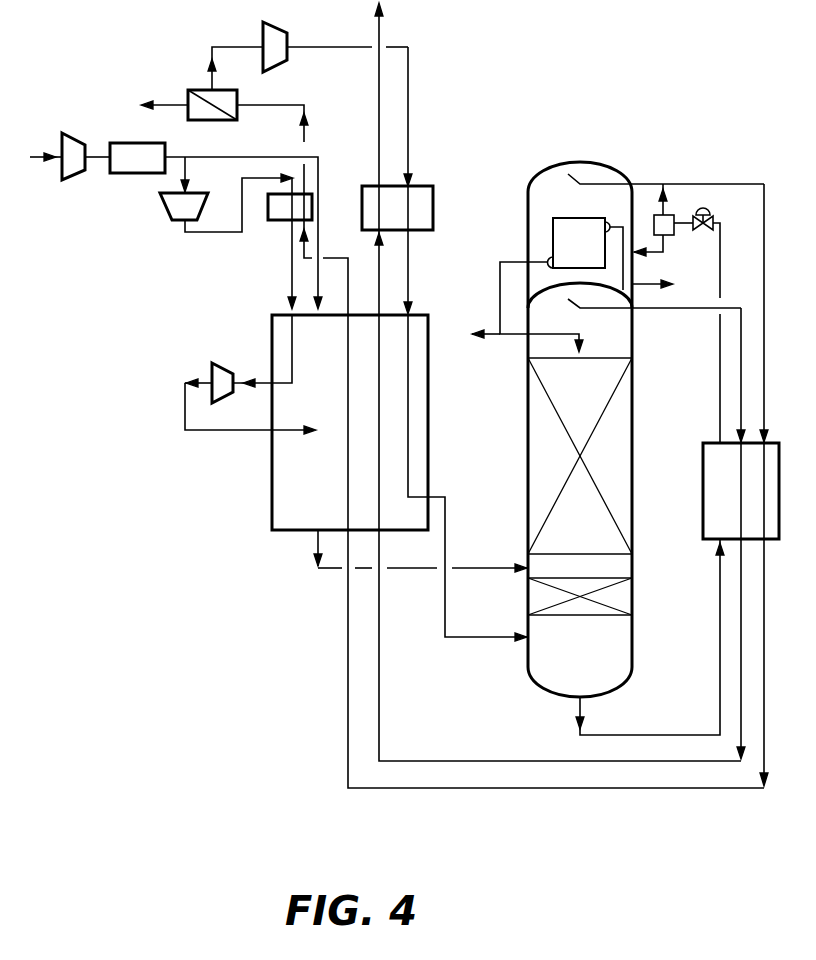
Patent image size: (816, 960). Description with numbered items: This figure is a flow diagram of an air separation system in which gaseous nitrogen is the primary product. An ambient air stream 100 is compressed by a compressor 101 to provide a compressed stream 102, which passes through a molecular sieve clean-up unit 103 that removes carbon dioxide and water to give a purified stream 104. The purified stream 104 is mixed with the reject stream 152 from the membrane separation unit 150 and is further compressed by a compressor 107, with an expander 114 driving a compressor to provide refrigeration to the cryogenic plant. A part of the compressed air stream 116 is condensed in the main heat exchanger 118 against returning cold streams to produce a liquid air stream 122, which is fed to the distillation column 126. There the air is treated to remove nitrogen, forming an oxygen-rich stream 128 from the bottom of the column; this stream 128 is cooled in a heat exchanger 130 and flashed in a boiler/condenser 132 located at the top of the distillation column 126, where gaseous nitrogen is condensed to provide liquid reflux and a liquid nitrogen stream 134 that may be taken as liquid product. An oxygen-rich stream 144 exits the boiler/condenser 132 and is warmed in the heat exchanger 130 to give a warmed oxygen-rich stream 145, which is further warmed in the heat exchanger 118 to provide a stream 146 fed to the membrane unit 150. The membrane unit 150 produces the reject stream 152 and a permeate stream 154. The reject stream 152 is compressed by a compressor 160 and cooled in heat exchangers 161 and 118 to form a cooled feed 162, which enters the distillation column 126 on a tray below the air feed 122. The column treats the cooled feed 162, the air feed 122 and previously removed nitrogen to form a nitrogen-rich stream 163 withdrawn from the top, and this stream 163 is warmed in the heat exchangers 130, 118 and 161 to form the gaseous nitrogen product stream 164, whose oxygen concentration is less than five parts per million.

The ambient air stream 100 is at (43, 146).
The compressor 101 is at (66, 134).
The compressed air stream 102 is at (98, 150).
The molecular sieve clean-up unit 103 is at (152, 168).
The purified stream 104 is at (202, 158).
The compressor 107 is at (163, 208).
The expander 114 is at (210, 368).
The compressed air stream 116 is at (290, 270).
The main heat exchanger 118 is at (375, 424).
The liquid air stream 122 is at (472, 564).
The distillation column 126 is at (591, 660).
The oxygen-rich stream 128 is at (721, 258).
The heat exchanger 130 is at (702, 470).
The boiler/condenser 132 is at (593, 254).
The liquid nitrogen stream 134 is at (493, 337).
The oxygen-rich stream 144 is at (692, 182).
The warmed oxygen-rich stream 145 is at (348, 597).
The oxygen-rich stream 146 is at (282, 105).
The membrane separation unit 150 is at (208, 121).
The reject stream 152 is at (250, 48).
The permeate stream 154 is at (174, 102).
The compressor 160 is at (268, 22).
The heat exchanger 161 is at (436, 204).
The cooled feed 162 is at (457, 600).
The nitrogen-rich stream 163 is at (370, 265).
The gaseous nitrogen product stream 164 is at (384, 30).